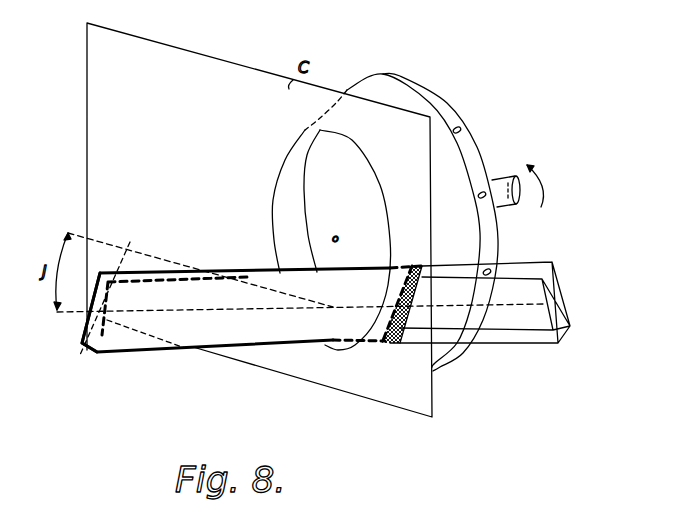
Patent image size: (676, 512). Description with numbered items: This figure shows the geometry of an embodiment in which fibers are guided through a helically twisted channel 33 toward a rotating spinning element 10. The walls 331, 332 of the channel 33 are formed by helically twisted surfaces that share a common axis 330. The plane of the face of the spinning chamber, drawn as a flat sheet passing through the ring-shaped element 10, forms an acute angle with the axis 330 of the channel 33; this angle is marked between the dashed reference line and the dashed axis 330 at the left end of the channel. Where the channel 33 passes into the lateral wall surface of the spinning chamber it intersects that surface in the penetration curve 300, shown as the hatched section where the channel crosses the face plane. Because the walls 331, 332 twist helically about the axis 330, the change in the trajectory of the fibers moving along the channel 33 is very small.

The rotatable ring 10 is at (472, 157).
The penetration curve 300 is at (412, 333).
The axis of the channel 330 is at (513, 303).
The helically twisted channel 33 is at (199, 285).
The wall of the channel 331 is at (88, 318).
The wall of the channel 332 is at (106, 303).